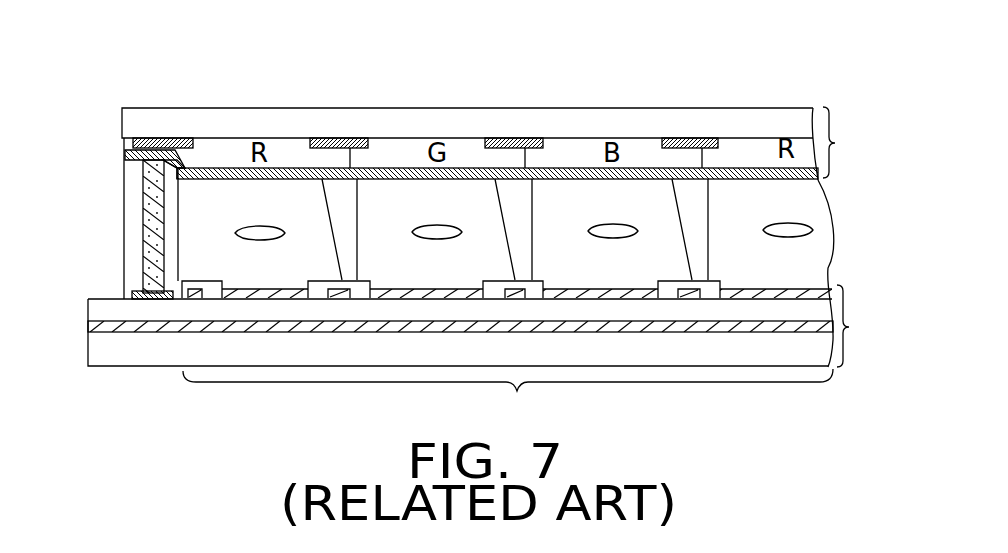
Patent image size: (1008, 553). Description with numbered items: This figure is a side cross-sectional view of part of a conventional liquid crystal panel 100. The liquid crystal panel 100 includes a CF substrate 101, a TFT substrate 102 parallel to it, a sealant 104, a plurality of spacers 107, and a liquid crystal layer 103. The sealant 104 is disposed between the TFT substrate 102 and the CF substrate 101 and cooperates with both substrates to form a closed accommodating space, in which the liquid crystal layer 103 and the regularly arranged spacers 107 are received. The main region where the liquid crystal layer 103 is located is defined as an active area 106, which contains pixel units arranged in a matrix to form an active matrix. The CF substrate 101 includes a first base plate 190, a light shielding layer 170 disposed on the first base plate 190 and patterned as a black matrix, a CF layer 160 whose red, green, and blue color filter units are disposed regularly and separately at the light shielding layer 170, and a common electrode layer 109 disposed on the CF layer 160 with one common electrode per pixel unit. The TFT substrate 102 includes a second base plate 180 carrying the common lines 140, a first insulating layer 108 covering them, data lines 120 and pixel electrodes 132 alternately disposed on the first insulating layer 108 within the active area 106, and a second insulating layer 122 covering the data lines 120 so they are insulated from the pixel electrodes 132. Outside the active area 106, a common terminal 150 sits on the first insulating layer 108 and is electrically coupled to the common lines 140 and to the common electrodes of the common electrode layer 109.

The liquid crystal panel 100 is at (459, 67).
The CF substrate 101 is at (851, 142).
The TFT substrate 102 is at (866, 326).
The liquid crystal layer 103 is at (800, 231).
The sealant 104 is at (114, 253).
The active area 106 is at (508, 396).
The spacers 107 is at (700, 208).
The first insulating layer 108 is at (108, 310).
The common electrode layer 109 is at (218, 168).
The data lines 120 is at (683, 288).
The second insulating layer 122 is at (542, 289).
The pixel electrodes 132 is at (800, 292).
The common lines 140 is at (98, 327).
The common terminal 150 is at (155, 300).
The CF layer 160 is at (183, 162).
The light shielding layer 170 is at (145, 139).
The second base plate 180 is at (108, 353).
The first base plate 190 is at (792, 122).